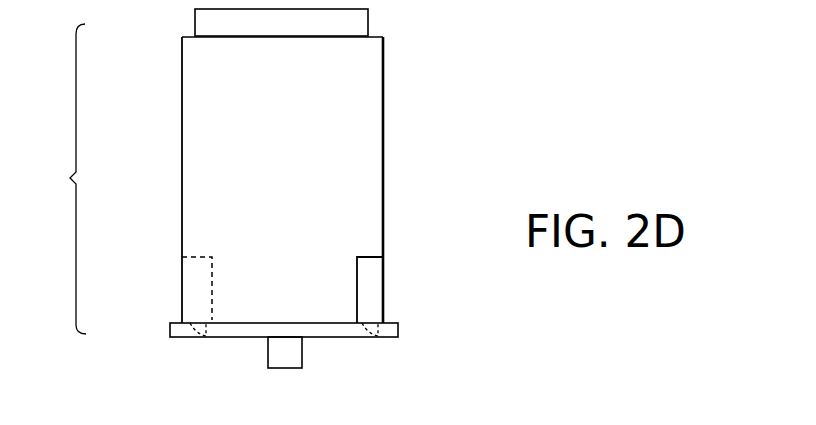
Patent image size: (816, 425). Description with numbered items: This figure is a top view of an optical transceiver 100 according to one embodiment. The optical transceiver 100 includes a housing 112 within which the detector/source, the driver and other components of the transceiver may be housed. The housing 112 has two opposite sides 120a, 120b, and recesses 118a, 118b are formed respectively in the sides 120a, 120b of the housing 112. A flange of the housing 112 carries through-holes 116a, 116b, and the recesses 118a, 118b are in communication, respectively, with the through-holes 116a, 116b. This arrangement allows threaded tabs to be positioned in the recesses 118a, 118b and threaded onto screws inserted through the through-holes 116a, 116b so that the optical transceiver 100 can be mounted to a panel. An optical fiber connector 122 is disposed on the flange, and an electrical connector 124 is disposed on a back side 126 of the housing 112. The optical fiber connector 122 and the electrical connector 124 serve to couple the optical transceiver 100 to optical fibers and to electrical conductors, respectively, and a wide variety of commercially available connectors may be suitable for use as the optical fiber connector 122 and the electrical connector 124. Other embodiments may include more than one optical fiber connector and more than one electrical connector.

The optical transceiver 100 is at (478, 77).
The housing 112 is at (56, 179).
The through-hole 116a is at (368, 335).
The through-hole 116b is at (196, 334).
The recess 118a is at (380, 286).
The recess 118b is at (182, 283).
The side 120a is at (385, 172).
The side 120b is at (182, 125).
The optical fiber connector 122 is at (290, 368).
The electrical connector 124 is at (368, 18).
The back side 126 is at (188, 36).